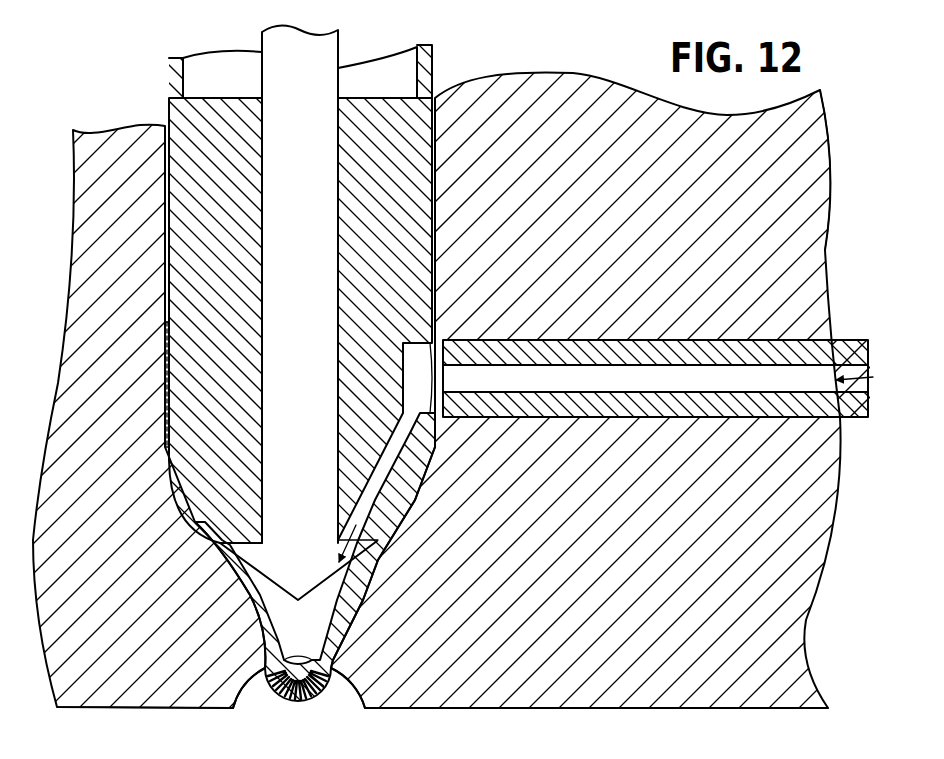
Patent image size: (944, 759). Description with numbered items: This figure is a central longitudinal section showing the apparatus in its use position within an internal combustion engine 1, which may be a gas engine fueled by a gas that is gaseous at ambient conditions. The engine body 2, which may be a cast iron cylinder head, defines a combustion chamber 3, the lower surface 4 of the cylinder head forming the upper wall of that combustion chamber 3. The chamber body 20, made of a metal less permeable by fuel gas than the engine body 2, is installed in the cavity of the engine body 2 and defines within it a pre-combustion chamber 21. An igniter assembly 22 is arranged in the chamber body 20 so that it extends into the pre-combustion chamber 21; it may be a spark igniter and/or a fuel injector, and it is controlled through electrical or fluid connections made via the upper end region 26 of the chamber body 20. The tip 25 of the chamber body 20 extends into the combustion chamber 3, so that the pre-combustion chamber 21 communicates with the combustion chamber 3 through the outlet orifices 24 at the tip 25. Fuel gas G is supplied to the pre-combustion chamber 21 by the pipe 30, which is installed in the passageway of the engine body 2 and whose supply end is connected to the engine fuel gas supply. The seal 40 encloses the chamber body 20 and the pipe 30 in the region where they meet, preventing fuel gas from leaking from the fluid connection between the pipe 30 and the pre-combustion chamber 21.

The internal combustion engine 1 is at (838, 110).
The engine body 2 is at (834, 175).
The combustion chamber 3 is at (294, 755).
The lower surface 4 is at (401, 709).
The chamber body 20 is at (441, 57).
The pre-combustion chamber 21 is at (317, 643).
The igniter assembly 22 is at (316, 388).
The outlet orifices 24 is at (313, 697).
The tip 25 is at (272, 680).
The upper end region 26 is at (208, 38).
The pipe 30 is at (849, 337).
The seal 40 is at (163, 346).